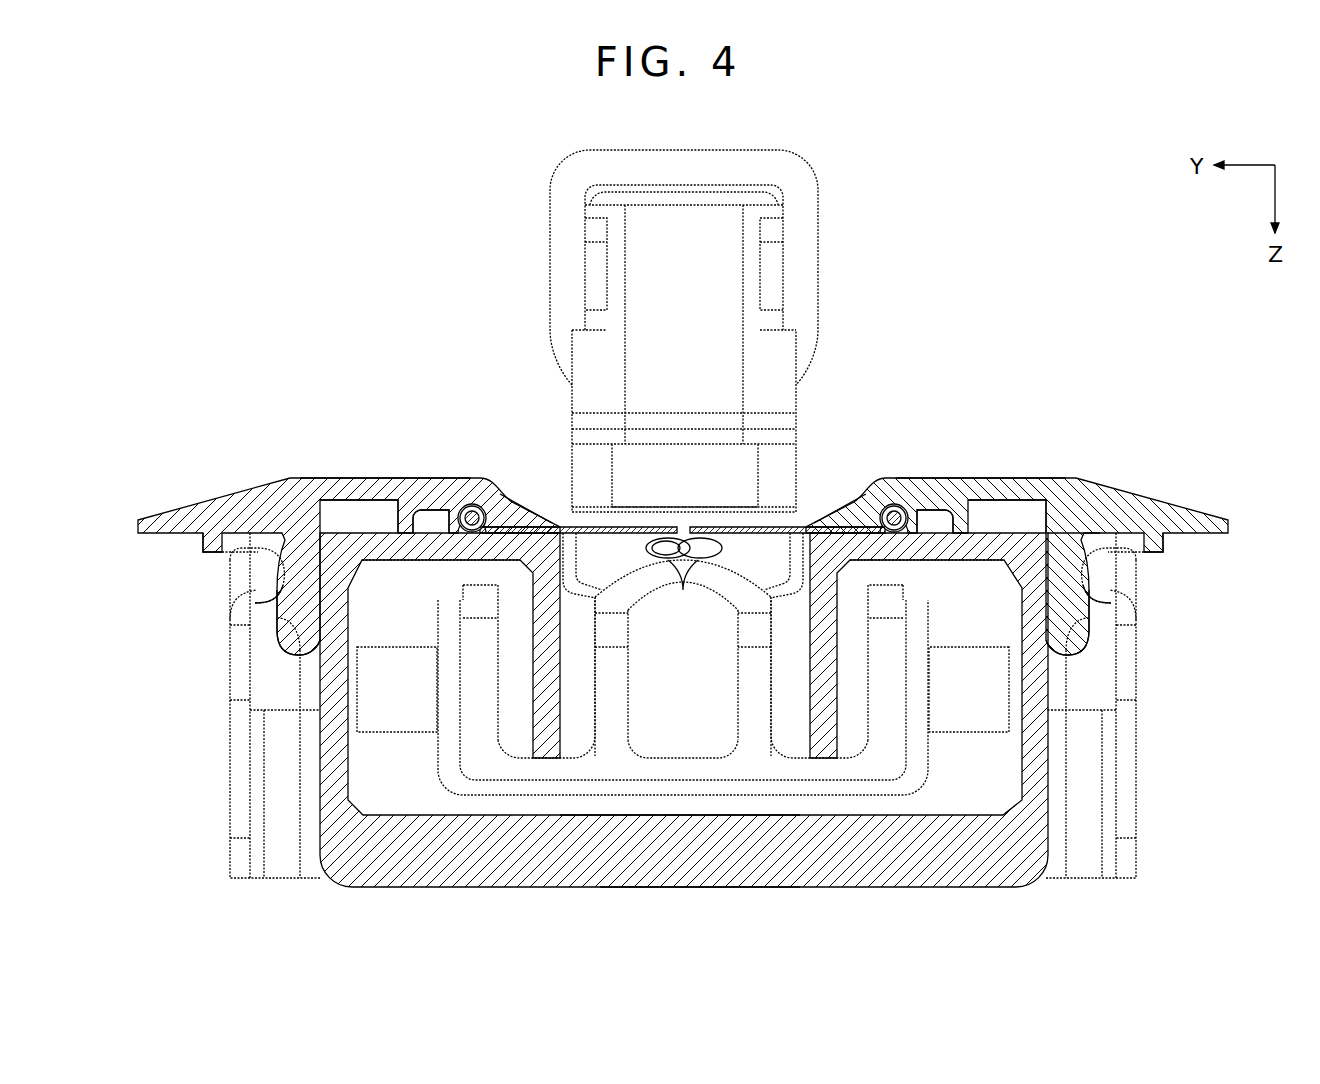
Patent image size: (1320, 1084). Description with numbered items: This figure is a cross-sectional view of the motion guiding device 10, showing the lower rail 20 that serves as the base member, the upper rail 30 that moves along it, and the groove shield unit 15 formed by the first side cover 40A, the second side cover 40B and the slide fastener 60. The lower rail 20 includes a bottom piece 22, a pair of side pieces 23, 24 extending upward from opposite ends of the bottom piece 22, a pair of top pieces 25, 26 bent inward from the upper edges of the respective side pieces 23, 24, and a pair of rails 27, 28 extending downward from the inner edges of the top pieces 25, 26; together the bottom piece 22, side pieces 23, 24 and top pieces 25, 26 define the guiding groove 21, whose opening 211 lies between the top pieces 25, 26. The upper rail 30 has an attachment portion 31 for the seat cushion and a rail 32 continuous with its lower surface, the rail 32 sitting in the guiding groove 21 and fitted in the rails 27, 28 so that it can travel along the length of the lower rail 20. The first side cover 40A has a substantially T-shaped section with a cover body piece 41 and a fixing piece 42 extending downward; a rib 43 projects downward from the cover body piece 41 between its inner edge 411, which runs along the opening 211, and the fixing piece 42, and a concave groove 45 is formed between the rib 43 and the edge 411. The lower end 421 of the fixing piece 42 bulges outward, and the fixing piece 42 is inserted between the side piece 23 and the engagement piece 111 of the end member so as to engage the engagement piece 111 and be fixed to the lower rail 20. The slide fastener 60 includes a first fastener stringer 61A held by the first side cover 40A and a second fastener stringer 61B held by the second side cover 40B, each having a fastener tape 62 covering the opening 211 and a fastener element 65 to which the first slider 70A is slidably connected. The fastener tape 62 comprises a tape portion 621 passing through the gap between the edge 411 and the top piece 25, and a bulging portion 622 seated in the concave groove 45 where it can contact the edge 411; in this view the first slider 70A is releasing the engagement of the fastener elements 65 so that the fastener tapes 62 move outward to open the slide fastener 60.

The motion guiding device 10 is at (985, 177).
The groove shield unit 15 is at (1080, 480).
The lower rail 20 is at (1020, 880).
The guiding groove 21 is at (640, 803).
The bottom piece 22 is at (710, 888).
The side piece 23 is at (322, 770).
The side piece 24 is at (1044, 775).
The top piece 25 is at (425, 566).
The top piece 26 is at (953, 566).
The rail 27 is at (556, 681).
The rail 28 is at (812, 681).
The upper rail 30 is at (792, 162).
The attachment portion 31 is at (808, 196).
The rail 32 is at (890, 757).
The first side cover 40A is at (236, 492).
The second side cover 40B is at (1130, 492).
The cover body piece 41 is at (1038, 477).
The fixing piece 42 is at (1126, 592).
The rib 43 is at (966, 499).
The concave groove 45 is at (929, 492).
The slide fastener 60 is at (690, 512).
The first fastener stringer 61A is at (622, 530).
The second fastener stringer 61B is at (750, 530).
The fastener tape 62 is at (784, 540).
The fastener element 65 is at (683, 590).
The first slider 70A is at (635, 282).
The engagement piece 111 is at (1121, 566).
The opening 211 is at (777, 513).
The edge 411 is at (818, 526).
The lower end 421 is at (1089, 630).
The tape portion 621 is at (820, 522).
The bulging portion 622 is at (894, 505).